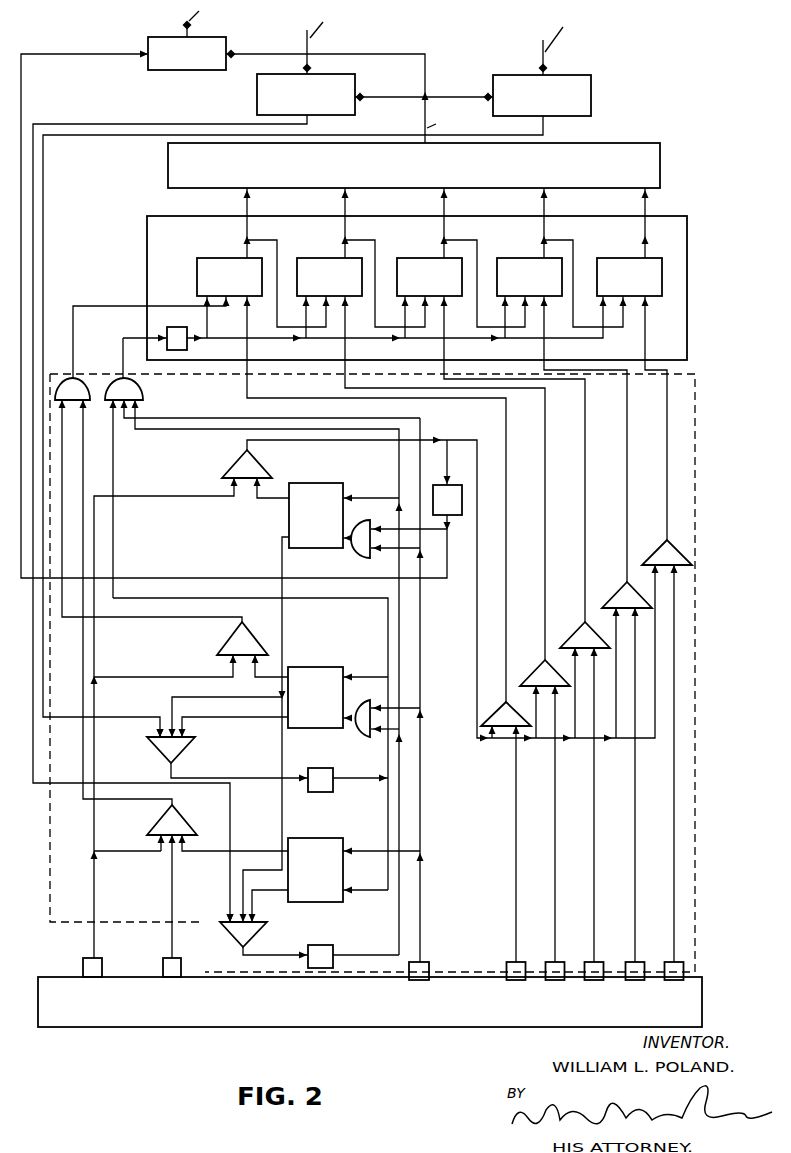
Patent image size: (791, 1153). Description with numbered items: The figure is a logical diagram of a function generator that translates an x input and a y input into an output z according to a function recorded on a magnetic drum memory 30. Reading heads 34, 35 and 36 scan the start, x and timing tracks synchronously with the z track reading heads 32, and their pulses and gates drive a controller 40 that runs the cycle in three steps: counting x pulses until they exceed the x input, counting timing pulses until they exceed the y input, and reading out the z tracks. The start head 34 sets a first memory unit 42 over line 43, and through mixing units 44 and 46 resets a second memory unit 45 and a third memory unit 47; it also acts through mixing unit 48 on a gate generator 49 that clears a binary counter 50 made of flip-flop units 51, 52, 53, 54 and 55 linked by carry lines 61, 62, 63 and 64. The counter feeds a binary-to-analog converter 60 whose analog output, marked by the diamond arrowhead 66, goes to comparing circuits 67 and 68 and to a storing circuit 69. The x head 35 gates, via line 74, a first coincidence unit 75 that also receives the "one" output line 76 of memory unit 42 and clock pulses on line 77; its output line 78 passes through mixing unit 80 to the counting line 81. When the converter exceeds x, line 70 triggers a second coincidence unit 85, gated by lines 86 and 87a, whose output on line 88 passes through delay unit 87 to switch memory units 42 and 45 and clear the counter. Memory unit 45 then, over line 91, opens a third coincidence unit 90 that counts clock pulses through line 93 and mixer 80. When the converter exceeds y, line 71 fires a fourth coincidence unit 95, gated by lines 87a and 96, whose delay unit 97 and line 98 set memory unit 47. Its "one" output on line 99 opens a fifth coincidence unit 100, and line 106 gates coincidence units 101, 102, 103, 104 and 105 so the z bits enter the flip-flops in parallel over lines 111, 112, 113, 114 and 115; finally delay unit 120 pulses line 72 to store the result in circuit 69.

The magnetic drum memory 30 is at (702, 1016).
The z track reading heads 32 is at (684, 972).
The start track reading head 34 is at (430, 972).
The x track reading head 35 is at (163, 963).
The timing track reading head 36 is at (83, 963).
The controller 40 is at (695, 578).
The first memory unit 42 is at (307, 838).
The line 43 is at (420, 893).
The mixing unit 44 is at (363, 740).
The second memory unit 45 is at (345, 668).
The mixing unit 46 is at (398, 499).
The third memory unit 47 is at (286, 524).
The mixing unit 48 is at (143, 397).
The gate generator 49 is at (173, 327).
The binary counter 50 is at (147, 245).
The first flip-flop unit 51 is at (225, 258).
The flip-flop unit 52 is at (330, 258).
The flip-flop unit 53 is at (437, 258).
The flip-flop unit 54 is at (537, 258).
The flip-flop unit 55 is at (637, 258).
The binary-to-analog converter 60 is at (612, 143).
The carry line 61 is at (277, 303).
The carry line 62 is at (375, 303).
The carry line 63 is at (477, 305).
The carry line 64 is at (573, 305).
The diamond shaped arrowhead 66 is at (423, 100).
The comparing circuit 67 is at (595, 98).
The comparing circuit 68 is at (257, 85).
The storing circuit 69 is at (222, 37).
The output line 70 is at (160, 136).
The output line 71 is at (118, 122).
The line 72 is at (118, 52).
The line 74 is at (173, 863).
The first coincidence unit 75 is at (187, 830).
The 1 output line 76 is at (265, 850).
The line 77 is at (187, 495).
The output line 78 is at (84, 662).
The mixing unit 80 is at (107, 365).
The output line 81 is at (135, 311).
The second coincidence unit 85 is at (157, 750).
The line 86 is at (200, 719).
The delay unit 87 is at (317, 768).
The line 87a is at (280, 613).
The line 88 is at (257, 776).
The third coincidence unit 90 is at (230, 645).
The line 91 is at (265, 676).
The line 93 is at (188, 618).
The fourth coincidence unit 95 is at (233, 937).
The line 96 is at (263, 891).
The delay unit 97 is at (337, 948).
The line 98 is at (263, 955).
The line 99 is at (278, 499).
The fifth coincidence unit 100 is at (230, 468).
The coincidence unit 101 is at (483, 716).
The coincidence unit 102 is at (534, 666).
The coincidence unit 103 is at (577, 620).
The coincidence unit 104 is at (615, 588).
The coincidence unit 105 is at (657, 551).
The line 106 is at (380, 442).
The line 111 is at (506, 548).
The line 112 is at (545, 527).
The line 113 is at (586, 495).
The line 114 is at (627, 485).
The line 115 is at (667, 503).
The delay unit 120 is at (462, 507).